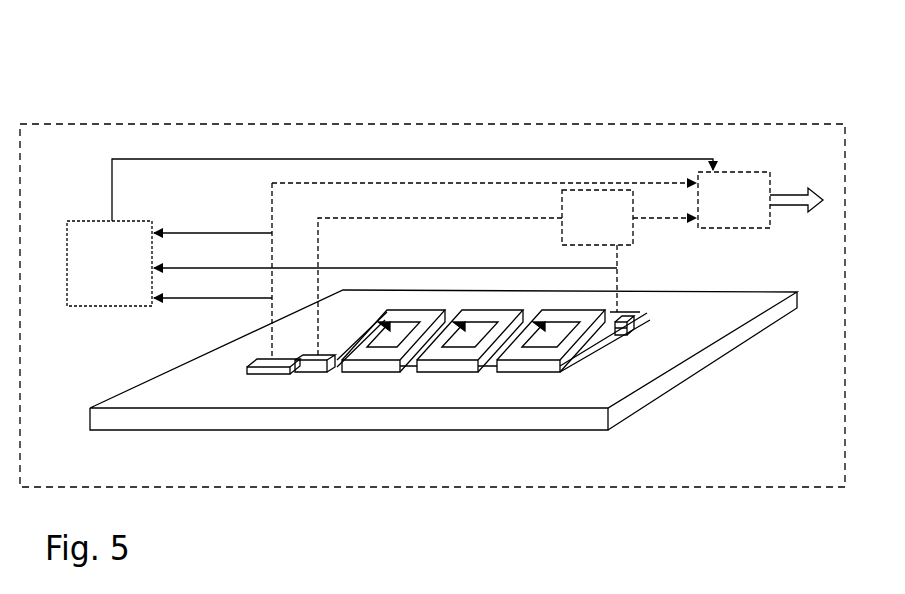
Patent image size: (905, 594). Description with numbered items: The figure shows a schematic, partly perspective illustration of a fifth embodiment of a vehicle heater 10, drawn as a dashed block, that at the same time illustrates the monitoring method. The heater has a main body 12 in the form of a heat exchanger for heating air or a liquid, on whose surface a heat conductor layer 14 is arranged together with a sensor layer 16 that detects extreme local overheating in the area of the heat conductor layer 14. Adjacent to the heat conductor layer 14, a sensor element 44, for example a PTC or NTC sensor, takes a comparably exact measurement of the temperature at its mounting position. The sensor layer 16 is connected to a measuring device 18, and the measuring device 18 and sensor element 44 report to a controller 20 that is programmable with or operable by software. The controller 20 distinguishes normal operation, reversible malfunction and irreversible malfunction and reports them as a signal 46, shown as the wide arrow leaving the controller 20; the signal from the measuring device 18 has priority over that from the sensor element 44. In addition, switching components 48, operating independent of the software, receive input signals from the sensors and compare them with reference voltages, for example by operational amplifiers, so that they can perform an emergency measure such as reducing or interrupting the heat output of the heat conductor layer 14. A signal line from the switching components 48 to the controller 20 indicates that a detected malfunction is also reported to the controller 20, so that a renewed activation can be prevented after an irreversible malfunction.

The vehicle heater 10 is at (117, 124).
The main body 12 is at (703, 358).
The heat conductor layer 14 is at (690, 327).
The sensor layer 16 is at (642, 327).
The measuring device 18 is at (507, 273).
The controller 20 is at (734, 200).
The sensor element 44 is at (247, 364).
The signal 46 is at (789, 192).
The switching components 48 is at (390, 258).